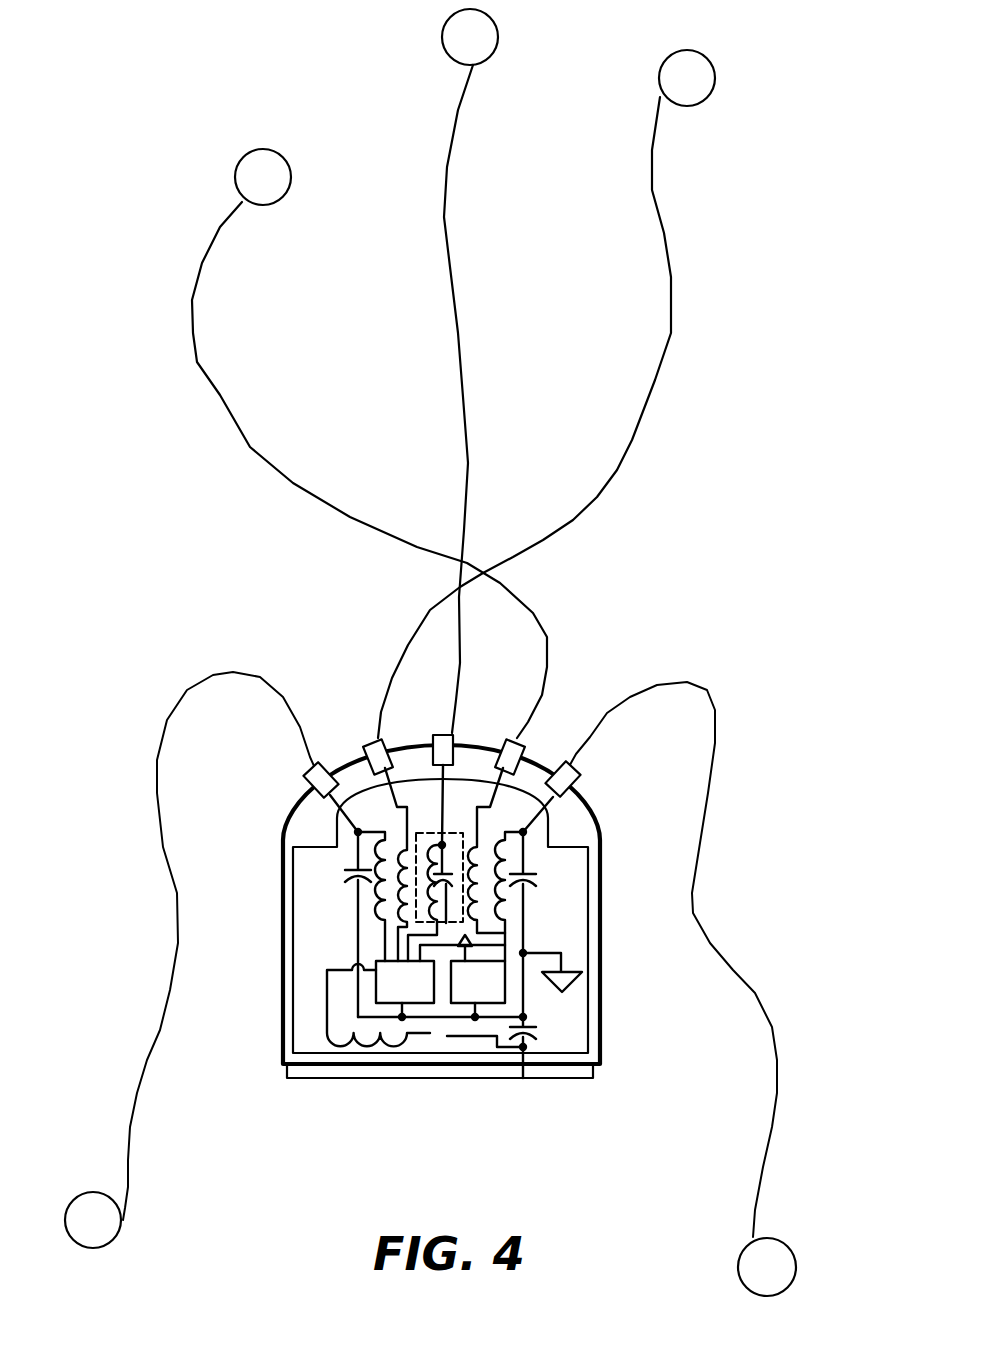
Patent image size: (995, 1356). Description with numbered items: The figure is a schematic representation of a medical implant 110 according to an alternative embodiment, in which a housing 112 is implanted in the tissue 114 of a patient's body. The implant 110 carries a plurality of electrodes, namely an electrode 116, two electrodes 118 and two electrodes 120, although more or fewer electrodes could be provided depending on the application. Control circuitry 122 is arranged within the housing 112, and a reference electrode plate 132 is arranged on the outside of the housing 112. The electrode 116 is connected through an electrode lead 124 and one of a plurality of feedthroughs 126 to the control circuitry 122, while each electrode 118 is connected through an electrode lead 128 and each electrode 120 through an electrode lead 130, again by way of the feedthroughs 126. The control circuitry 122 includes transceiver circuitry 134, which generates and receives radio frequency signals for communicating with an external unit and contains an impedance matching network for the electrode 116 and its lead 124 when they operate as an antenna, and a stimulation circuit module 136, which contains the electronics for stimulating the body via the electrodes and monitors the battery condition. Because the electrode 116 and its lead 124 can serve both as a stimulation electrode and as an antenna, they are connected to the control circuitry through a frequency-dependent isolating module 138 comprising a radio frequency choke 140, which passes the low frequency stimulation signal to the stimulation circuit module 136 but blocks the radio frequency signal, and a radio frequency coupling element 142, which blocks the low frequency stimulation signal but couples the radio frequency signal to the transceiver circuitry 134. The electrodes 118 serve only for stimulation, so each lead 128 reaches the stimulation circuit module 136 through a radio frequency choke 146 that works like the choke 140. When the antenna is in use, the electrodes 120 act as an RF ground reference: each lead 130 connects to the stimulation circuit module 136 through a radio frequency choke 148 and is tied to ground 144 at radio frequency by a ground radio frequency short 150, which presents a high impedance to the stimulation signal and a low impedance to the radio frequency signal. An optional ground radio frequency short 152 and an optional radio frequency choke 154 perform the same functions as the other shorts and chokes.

The implant 110 is at (740, 270).
The housing 112 is at (284, 975).
The tissue 114 is at (757, 453).
The electrode 116 is at (441, 44).
The electrode 118 is at (235, 166).
The electrode 120 is at (125, 1218).
The control circuitry 122 is at (283, 877).
The electrode lead 124 is at (460, 330).
The feedthroughs 126 is at (337, 765).
The electrode lead 128 is at (193, 334).
The electrode lead 130 is at (131, 1126).
The reference electrode plate 132 is at (378, 1078).
The transceiver circuitry 134 is at (505, 993).
The stimulation circuit module 136 is at (376, 988).
The frequency-dependent isolating module 138 is at (405, 860).
The radio frequency choke 140 is at (473, 888).
The radio frequency coupling element 142 is at (440, 845).
The ground 144 is at (573, 960).
The radio frequency choke 146 is at (497, 895).
The radio frequency choke 148 is at (538, 858).
The ground radio frequency short 150 is at (542, 883).
The ground radio frequency short 152 is at (540, 1032).
The radio frequency choke 154 is at (407, 1035).